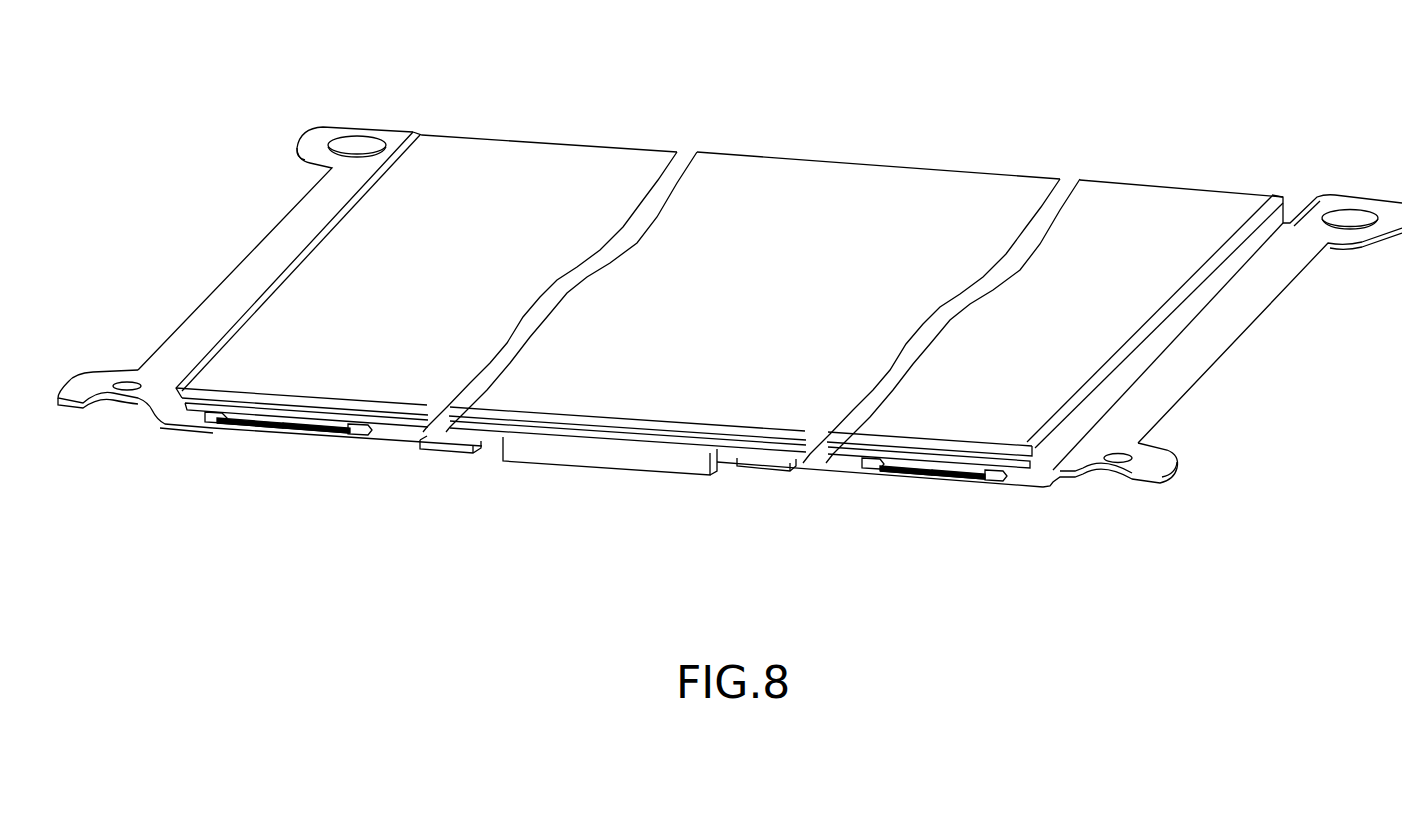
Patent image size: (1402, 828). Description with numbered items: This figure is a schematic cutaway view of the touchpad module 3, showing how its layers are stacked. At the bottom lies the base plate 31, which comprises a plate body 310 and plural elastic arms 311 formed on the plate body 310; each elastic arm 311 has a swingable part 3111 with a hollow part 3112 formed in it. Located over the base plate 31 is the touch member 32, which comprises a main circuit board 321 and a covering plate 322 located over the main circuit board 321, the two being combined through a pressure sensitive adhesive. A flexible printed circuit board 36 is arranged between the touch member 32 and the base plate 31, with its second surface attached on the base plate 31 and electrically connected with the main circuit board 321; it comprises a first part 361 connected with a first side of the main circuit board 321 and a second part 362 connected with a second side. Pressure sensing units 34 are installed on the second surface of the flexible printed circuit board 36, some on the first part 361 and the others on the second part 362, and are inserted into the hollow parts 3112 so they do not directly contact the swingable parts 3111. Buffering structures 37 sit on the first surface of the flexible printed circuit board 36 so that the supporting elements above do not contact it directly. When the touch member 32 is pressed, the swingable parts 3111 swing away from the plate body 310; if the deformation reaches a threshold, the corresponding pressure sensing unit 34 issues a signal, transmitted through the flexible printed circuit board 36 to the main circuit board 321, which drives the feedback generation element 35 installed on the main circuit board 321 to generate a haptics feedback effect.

The touchpad module 3 is at (1223, 71).
The base plate 31 is at (614, 44).
The plate body 310 is at (422, 468).
The elastic arms 311 is at (632, 344).
The swingable part 3111 is at (333, 438).
The hollow part 3112 is at (290, 440).
The touch member 32 is at (751, 44).
The main circuit board 321 is at (655, 487).
The covering plate 322 is at (512, 473).
The pressure sensing units 34 is at (262, 430).
The feedback generation element 35 is at (613, 457).
The flexible printed circuit board 36 is at (887, 44).
The first part 361 is at (857, 508).
The second part 362 is at (207, 462).
The buffering structures 37 is at (288, 425).